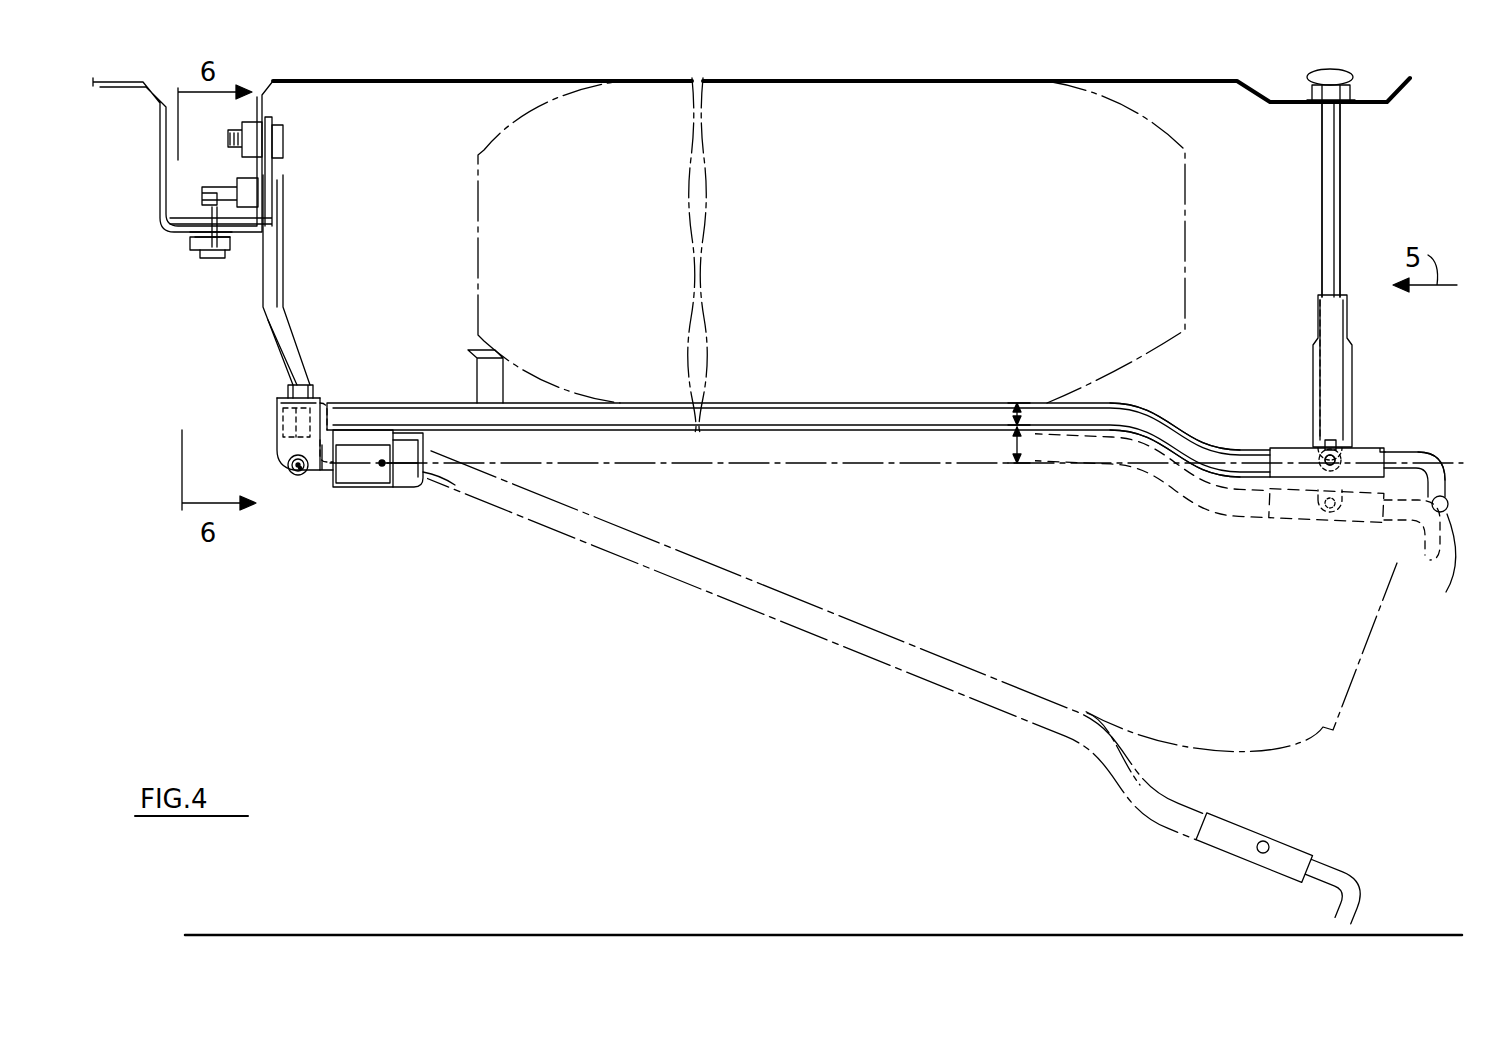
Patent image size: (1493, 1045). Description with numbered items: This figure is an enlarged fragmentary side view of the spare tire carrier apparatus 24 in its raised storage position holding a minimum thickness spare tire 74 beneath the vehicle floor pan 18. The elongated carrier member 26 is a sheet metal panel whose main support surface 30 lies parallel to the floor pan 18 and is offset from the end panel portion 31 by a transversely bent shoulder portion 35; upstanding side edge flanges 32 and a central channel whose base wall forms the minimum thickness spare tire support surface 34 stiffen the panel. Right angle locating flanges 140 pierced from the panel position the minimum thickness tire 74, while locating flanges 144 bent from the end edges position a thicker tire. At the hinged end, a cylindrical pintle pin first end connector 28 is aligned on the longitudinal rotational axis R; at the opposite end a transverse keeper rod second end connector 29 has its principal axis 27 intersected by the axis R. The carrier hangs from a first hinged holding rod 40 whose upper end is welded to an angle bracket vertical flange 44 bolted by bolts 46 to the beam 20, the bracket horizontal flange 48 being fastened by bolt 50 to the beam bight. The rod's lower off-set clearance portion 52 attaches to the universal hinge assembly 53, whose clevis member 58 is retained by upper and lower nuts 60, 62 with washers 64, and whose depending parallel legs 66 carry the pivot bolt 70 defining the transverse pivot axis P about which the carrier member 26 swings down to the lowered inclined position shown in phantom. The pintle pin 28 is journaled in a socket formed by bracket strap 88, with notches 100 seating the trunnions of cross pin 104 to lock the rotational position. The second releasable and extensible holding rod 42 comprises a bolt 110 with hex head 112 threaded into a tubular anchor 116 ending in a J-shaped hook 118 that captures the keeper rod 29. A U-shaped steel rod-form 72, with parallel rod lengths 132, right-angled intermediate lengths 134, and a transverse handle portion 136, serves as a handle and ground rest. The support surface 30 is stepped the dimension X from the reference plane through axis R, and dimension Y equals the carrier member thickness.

The floor pan 18 is at (357, 84).
The beam 20 is at (157, 157).
The spare tire carrier apparatus 24 is at (918, 478).
The carrier member 26 is at (983, 437).
The transverse principal axis 27 is at (1313, 445).
The pintle pin first end connector 28 is at (327, 450).
The keeper rod second end connector 29 is at (1331, 512).
The maximum thickness spare tire support surface 30 is at (770, 432).
The offset surface portion 31 is at (1242, 478).
The side edge flanges 32 is at (882, 428).
The minimum thickness spare tire support surface 34 is at (463, 402).
The bent shoulder portion 35 is at (1163, 462).
The first hinged holding rod 40 is at (284, 254).
The second releasable and extensible holding rod 42 is at (1355, 207).
The angle bracket vertical flange 44 is at (273, 168).
The bolts 46 is at (228, 183).
The horizontal flange 48 is at (247, 236).
The bolt 50 is at (207, 195).
The off-set clearance portion 52 is at (303, 348).
The universal hinge assembly 53 is at (226, 405).
The clevis member 58 is at (266, 430).
The upper nut 60 is at (287, 394).
The lower nut 62 is at (287, 427).
The washers 64 is at (318, 415).
The depending parallel legs 66 is at (277, 453).
The pivot pin or bolt 70 is at (296, 478).
The steel rod-form 72 is at (1401, 436).
The minimum thickness spare tire 74 is at (1152, 128).
The bracket strap 88 is at (353, 488).
The notches 100 is at (383, 466).
The cross pin 104 is at (396, 484).
The bolt 110 is at (1333, 150).
The hex head 112 is at (1350, 93).
The tubular anchor 116 is at (1313, 364).
The J-shaped hook 118 is at (1342, 452).
The parallel rod lengths 132 is at (1413, 447).
The right-angled intermediate lengths 134 is at (1446, 495).
The transverse handle portion 136 is at (1445, 568).
The locating flanges 140 is at (475, 375).
The locating flanges 144 is at (425, 472).
The pivot axis P is at (275, 480).
The rotational axis R is at (668, 463).
The offset dimension X is at (1020, 468).
The differential dimension Y is at (1033, 403).